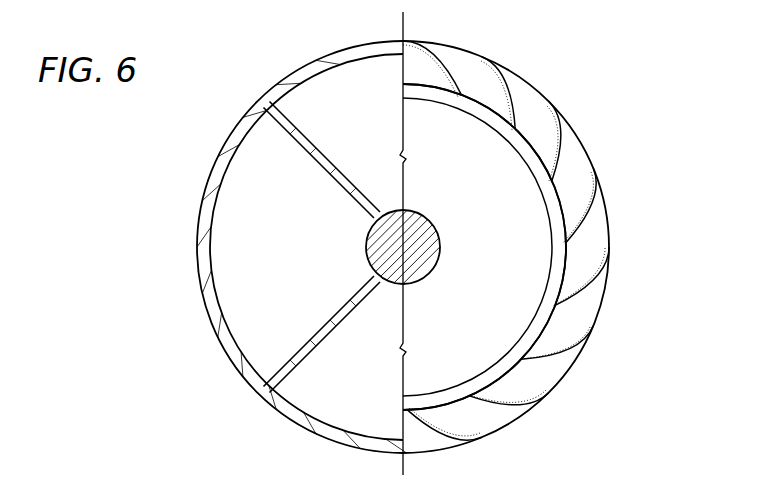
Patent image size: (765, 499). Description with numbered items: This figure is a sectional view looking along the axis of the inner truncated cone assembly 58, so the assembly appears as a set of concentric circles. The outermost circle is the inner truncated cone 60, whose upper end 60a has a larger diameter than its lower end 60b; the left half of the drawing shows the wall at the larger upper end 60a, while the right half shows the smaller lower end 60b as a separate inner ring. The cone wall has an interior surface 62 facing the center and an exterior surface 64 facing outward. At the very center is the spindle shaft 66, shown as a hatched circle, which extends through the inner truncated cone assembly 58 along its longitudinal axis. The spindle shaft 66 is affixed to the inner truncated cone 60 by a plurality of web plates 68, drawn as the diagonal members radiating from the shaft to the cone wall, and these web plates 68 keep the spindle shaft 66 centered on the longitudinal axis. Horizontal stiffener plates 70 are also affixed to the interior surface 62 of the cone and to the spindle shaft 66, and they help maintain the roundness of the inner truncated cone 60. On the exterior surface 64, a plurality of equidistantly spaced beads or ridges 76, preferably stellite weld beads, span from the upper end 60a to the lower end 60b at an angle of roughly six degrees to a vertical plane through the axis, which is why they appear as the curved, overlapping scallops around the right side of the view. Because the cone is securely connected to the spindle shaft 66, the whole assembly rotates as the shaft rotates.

The inner truncated cone assembly 58 is at (203, 300).
The inner truncated cone 60 is at (211, 172).
The upper end 60a is at (287, 75).
The lower end 60b is at (482, 370).
The interior surface 62 is at (472, 117).
The exterior surface 64 is at (472, 73).
The spindle shaft 66 is at (437, 232).
The web plates 68 is at (340, 170).
The horizontal stiffener plates 70 is at (386, 101).
The beads or ridges 76 is at (512, 102).